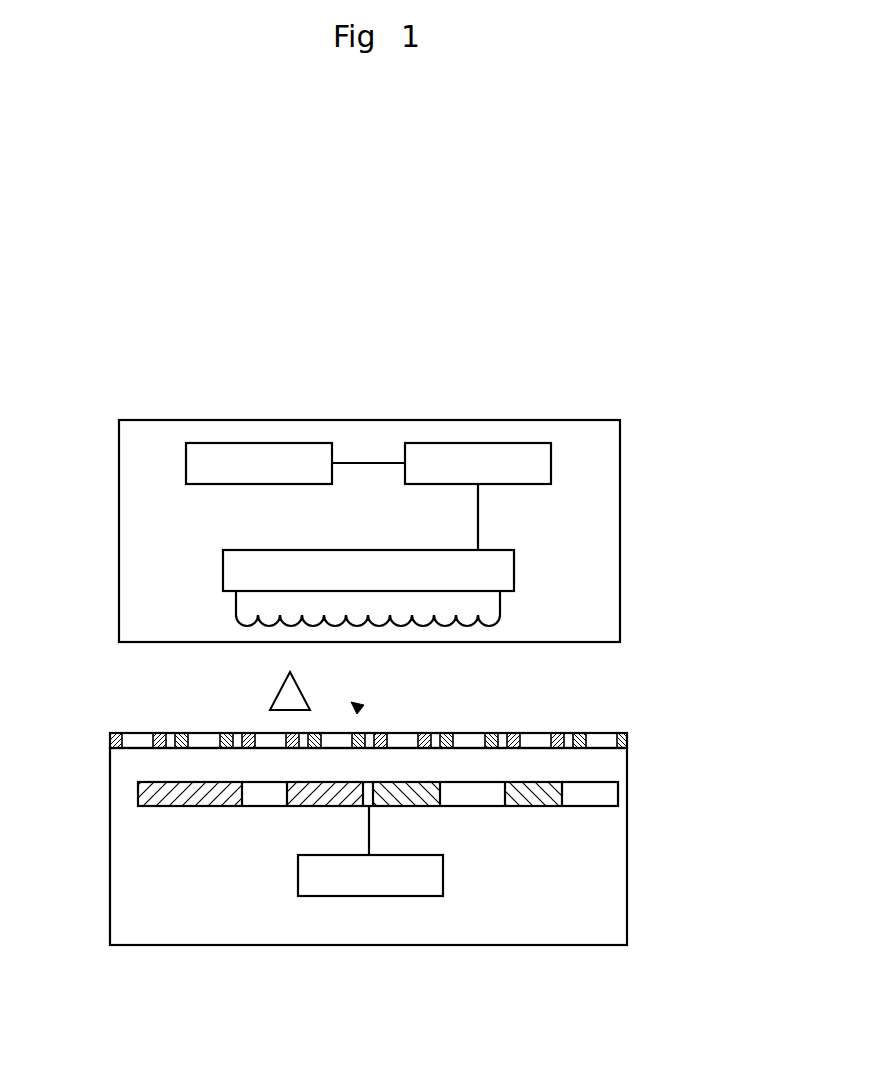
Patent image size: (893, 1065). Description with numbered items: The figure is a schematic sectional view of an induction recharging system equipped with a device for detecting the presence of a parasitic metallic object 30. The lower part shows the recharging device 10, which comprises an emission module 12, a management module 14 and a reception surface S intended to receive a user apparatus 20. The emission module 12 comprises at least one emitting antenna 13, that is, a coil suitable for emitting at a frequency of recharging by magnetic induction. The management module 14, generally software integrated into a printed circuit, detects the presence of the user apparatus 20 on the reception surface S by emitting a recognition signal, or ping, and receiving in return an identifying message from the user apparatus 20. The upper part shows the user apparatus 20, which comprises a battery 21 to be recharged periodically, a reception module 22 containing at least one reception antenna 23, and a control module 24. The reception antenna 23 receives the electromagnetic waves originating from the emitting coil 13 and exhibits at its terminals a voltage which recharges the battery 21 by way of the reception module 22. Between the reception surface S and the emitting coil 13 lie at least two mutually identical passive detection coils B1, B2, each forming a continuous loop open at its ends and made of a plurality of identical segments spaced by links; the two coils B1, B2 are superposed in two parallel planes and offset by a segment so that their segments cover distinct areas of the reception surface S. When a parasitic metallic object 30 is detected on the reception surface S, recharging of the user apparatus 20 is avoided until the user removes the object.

The recharging device 10 is at (110, 852).
The emission module 12 is at (588, 792).
The emitting antenna 13 is at (537, 785).
The management module 14 is at (369, 896).
The user apparatus 20 is at (118, 420).
The battery 21 is at (260, 443).
The reception module 22 is at (514, 569).
The reception antenna 23 is at (500, 602).
The control module 24 is at (478, 443).
The parasitic metallic object 30 is at (278, 690).
The reception surface S is at (357, 714).
The passive detection coil B1 is at (287, 733).
The passive detection coil B2 is at (367, 733).